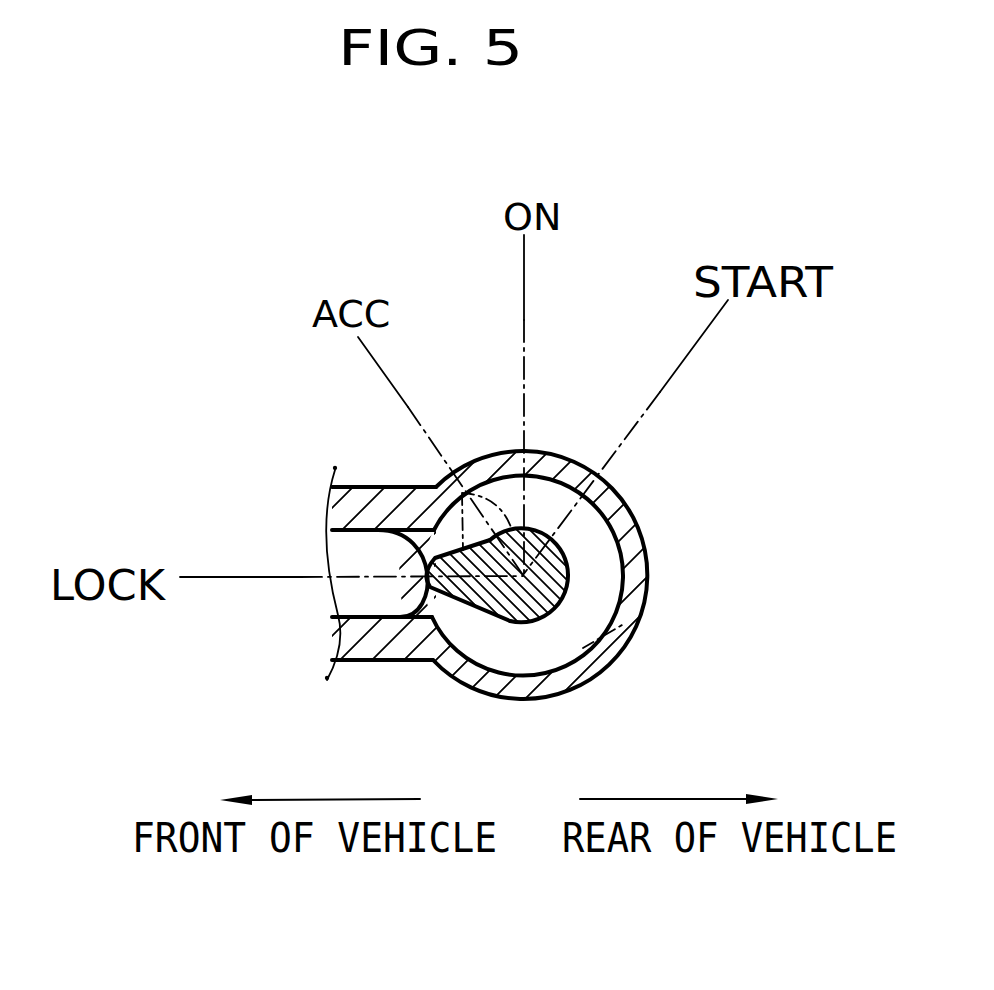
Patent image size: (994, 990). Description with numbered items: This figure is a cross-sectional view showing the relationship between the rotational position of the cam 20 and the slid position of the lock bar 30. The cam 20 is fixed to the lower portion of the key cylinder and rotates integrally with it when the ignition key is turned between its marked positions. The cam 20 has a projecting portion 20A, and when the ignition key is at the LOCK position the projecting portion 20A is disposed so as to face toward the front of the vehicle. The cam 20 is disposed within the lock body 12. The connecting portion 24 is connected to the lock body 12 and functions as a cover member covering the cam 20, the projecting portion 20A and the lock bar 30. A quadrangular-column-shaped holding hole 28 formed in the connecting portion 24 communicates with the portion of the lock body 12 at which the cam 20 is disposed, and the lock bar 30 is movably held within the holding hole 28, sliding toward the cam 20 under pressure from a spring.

The lock body 12 is at (645, 545).
The cam 20 is at (567, 598).
The projecting portion 20A is at (467, 608).
The connecting portion 24 is at (368, 497).
The holding hole 28 is at (370, 537).
The lock bar 30 is at (365, 598).